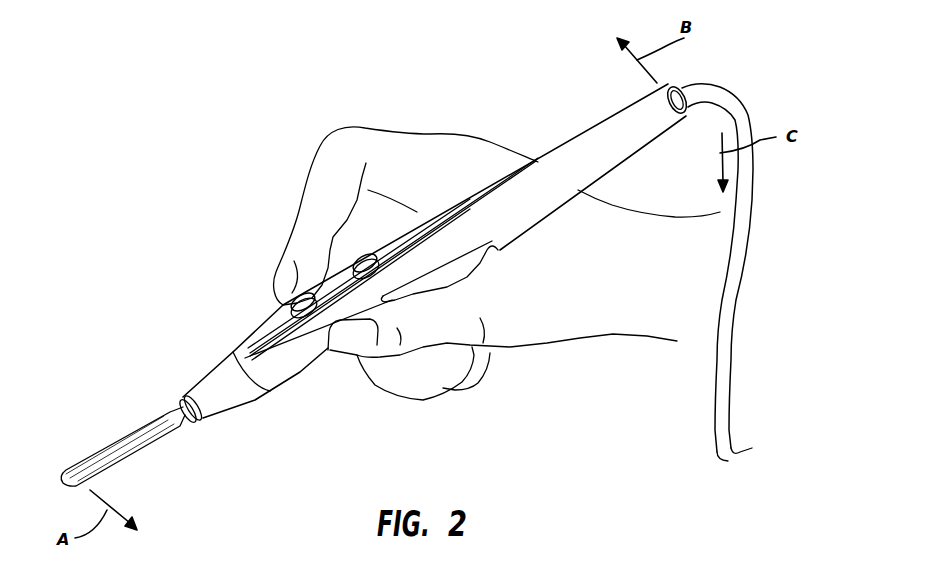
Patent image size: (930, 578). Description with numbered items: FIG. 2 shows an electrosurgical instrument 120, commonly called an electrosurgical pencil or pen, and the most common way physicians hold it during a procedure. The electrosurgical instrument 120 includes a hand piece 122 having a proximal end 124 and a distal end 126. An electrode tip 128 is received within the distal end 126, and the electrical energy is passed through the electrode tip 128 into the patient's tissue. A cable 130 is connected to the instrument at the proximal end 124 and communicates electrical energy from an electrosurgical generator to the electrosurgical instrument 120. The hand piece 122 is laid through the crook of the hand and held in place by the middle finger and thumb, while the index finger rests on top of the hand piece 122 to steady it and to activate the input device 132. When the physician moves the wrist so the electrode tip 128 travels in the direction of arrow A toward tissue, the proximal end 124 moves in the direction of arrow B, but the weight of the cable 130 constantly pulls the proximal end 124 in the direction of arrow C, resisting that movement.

The electrosurgical instrument 120 is at (442, 267).
The hand piece 122 is at (428, 228).
The proximal end 124 is at (658, 136).
The distal end 126 is at (207, 418).
The electrode tip 128 is at (113, 447).
The cable 130 is at (737, 302).
The input device 132 is at (305, 316).